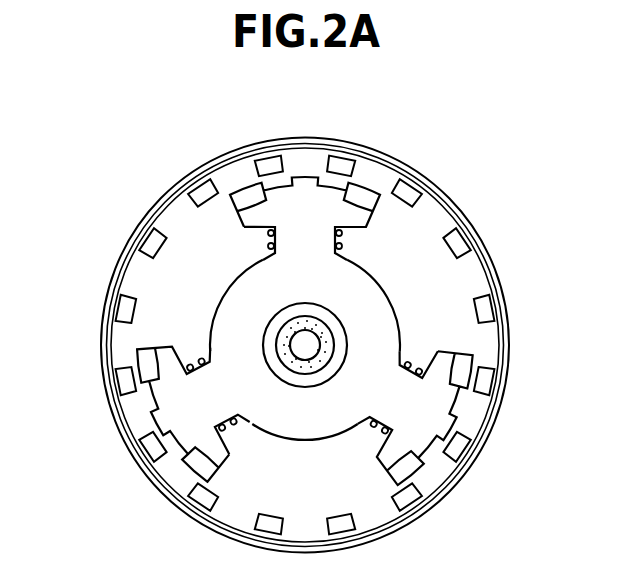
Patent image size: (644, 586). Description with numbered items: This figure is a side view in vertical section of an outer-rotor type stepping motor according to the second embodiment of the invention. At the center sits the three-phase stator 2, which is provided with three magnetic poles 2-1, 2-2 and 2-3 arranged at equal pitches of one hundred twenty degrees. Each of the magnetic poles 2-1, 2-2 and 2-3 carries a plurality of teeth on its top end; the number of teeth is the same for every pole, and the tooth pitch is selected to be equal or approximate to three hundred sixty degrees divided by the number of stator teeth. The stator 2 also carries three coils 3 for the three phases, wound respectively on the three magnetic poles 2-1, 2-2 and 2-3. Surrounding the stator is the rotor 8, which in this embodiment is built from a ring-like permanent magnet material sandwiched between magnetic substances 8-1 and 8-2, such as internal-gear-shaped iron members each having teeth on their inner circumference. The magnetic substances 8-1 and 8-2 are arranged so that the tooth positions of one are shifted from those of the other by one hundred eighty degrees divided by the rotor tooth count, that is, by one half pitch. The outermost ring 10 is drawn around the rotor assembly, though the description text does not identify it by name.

The three-phase stator 2 is at (390, 296).
The magnetic pole 2-1 is at (232, 215).
The magnetic pole 2-2 is at (170, 344).
The magnetic pole 2-3 is at (456, 356).
The coil 3 is at (268, 249).
The rotor 8 is at (428, 161).
The magnetic substance 8-1 is at (431, 203).
The magnetic substance 8-2 is at (473, 240).
The stator yoke 10 is at (501, 282).